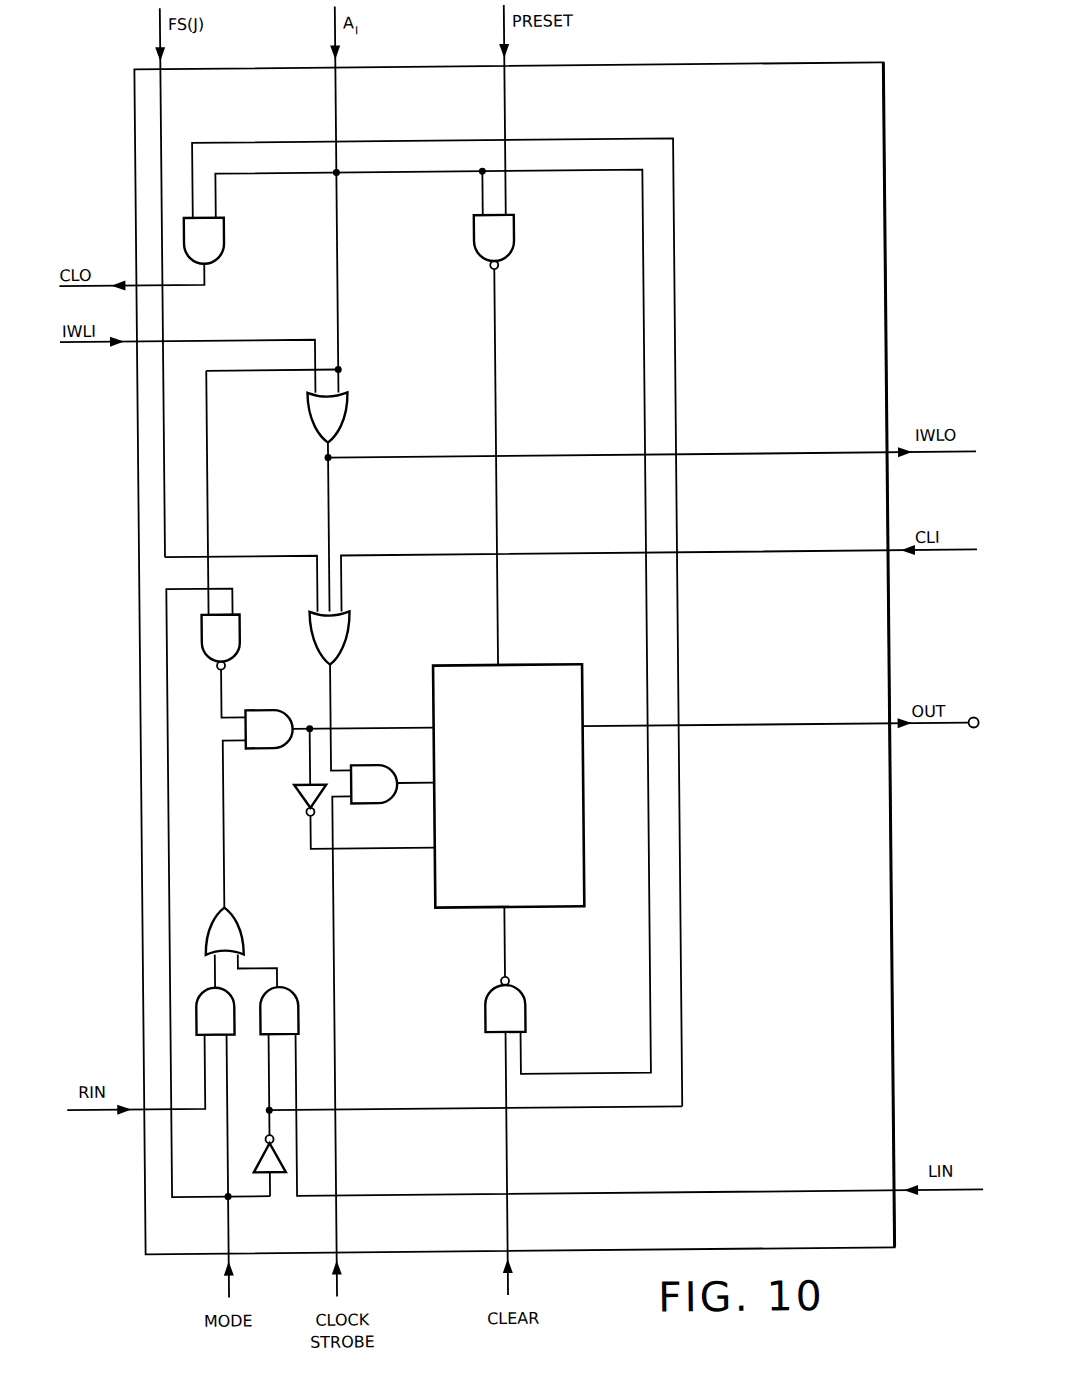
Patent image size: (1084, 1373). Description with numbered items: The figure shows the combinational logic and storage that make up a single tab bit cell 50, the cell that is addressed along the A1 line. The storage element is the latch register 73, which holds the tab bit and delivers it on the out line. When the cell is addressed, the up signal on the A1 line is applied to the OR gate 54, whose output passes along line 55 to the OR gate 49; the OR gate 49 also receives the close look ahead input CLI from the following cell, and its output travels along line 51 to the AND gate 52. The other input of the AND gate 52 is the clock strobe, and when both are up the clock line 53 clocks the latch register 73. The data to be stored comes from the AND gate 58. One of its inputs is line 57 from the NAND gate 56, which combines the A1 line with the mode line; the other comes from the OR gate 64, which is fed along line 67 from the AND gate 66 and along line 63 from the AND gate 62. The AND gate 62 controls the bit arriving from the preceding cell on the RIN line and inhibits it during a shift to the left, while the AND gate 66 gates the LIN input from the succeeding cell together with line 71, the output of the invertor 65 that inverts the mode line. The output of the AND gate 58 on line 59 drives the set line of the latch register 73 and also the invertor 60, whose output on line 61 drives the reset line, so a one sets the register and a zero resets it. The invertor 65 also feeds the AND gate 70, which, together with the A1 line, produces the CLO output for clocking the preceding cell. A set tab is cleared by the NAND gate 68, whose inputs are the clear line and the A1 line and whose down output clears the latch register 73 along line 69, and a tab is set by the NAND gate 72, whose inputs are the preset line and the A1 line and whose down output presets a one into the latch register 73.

The OR gate 49 is at (350, 623).
The tab bit cell 50 is at (892, 203).
The line 51 is at (331, 686).
The AND gate 52 is at (372, 764).
The clock line 53 is at (404, 784).
The OR gate 54 is at (349, 403).
The line 55 is at (328, 456).
The NAND gate 56 is at (240, 623).
The line 57 is at (220, 690).
The AND gate 58 is at (262, 708).
The line 59 is at (308, 722).
The invertor 60 is at (293, 792).
The line 61 is at (372, 849).
The AND gate 62 is at (231, 1011).
The input line of OR gate 64 63 is at (211, 969).
The OR gate 64 is at (236, 918).
The invertor 65 is at (267, 1175).
The AND gate 66 is at (294, 996).
The line 67 is at (271, 966).
The NAND gate 68 is at (523, 1002).
The clear input line 69 is at (503, 954).
The AND gate 70 is at (228, 234).
The line 71 is at (262, 1108).
The NAND gate 72 is at (518, 234).
The latch register 73 is at (582, 797).